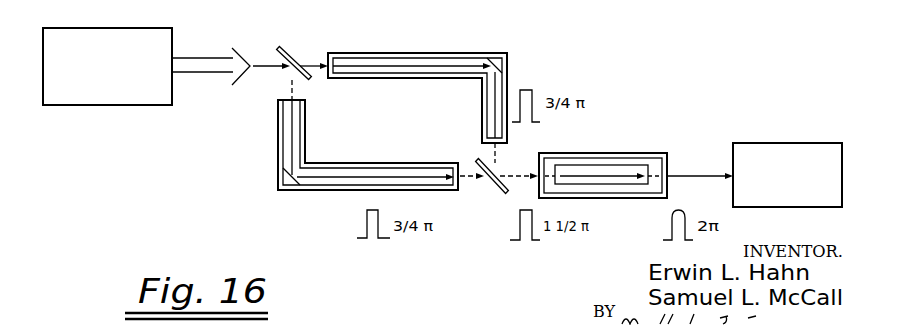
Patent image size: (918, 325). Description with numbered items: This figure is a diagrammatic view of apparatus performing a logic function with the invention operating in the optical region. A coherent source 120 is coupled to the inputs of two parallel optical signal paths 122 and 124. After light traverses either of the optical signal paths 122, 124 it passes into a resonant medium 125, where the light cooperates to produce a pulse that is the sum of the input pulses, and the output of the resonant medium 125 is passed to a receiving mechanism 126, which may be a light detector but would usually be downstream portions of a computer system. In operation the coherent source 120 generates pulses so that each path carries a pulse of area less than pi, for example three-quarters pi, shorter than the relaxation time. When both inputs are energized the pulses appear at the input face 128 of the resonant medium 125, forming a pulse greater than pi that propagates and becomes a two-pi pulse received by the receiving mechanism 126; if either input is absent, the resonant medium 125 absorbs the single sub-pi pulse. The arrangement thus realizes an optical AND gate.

The coherent source 120 is at (131, 97).
The optical signal path 122 is at (395, 84).
The optical signal path 124 is at (391, 156).
The resonant medium 125 is at (618, 153).
The receiving mechanism 126 is at (795, 143).
The input face 128 is at (539, 157).